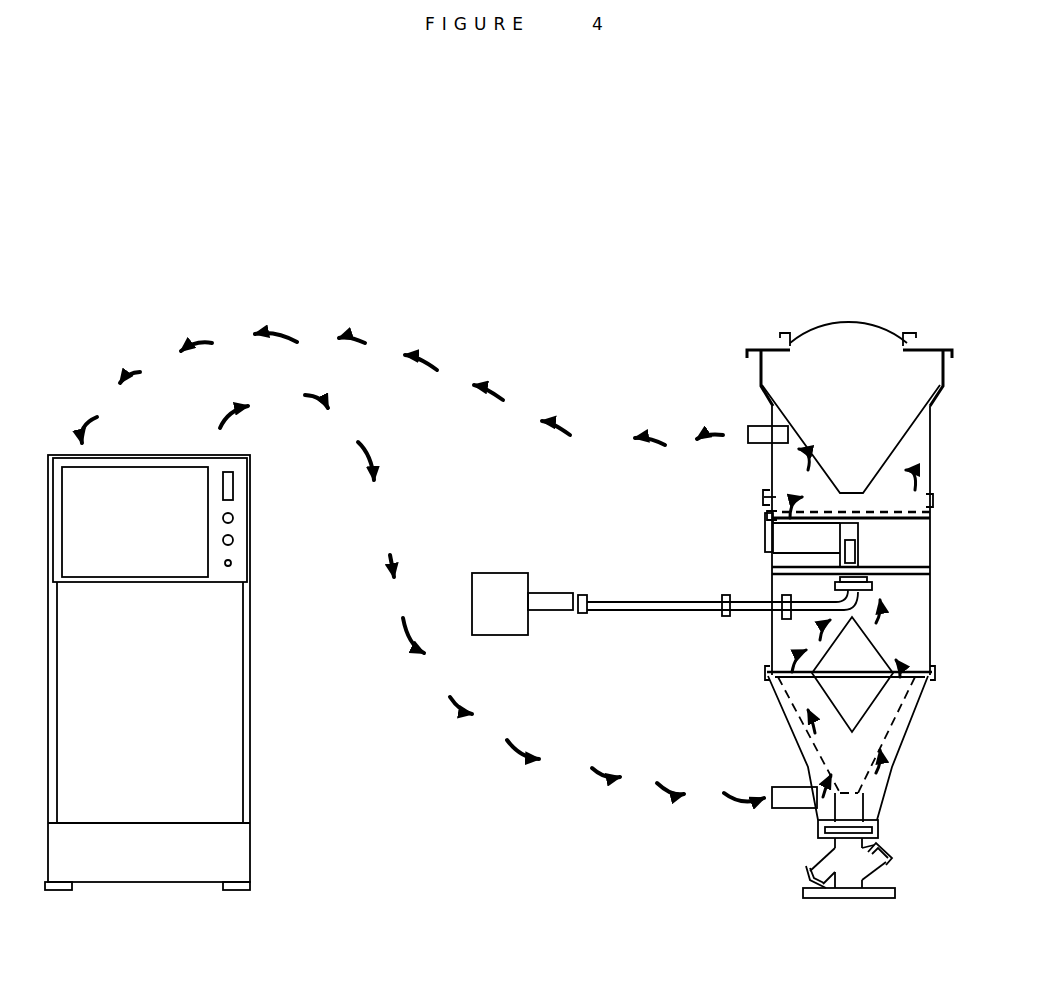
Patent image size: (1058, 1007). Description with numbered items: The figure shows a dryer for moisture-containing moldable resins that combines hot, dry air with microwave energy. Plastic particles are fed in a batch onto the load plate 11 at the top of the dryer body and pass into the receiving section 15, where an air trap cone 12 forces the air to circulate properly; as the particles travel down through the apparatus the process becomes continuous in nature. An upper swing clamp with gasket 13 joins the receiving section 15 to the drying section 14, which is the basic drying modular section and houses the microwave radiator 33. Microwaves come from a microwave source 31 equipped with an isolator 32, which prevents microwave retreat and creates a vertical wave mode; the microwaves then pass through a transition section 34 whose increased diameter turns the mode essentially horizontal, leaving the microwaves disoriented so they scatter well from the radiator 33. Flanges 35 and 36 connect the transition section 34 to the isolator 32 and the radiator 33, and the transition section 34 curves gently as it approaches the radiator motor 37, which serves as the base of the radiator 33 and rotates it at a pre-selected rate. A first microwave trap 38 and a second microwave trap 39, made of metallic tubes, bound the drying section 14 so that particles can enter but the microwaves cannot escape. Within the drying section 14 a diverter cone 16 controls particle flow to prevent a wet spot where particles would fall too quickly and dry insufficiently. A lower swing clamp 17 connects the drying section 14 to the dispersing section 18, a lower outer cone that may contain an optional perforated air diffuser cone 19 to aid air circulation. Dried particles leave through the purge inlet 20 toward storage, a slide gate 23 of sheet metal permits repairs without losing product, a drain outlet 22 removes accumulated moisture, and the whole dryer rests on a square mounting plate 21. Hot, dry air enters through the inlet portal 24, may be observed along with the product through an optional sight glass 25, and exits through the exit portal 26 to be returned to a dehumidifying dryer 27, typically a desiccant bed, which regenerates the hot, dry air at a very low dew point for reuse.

The load plate 11 is at (885, 328).
The air trap cone 12 is at (862, 387).
The upper swing clamp with gasket 13 is at (763, 494).
The drying section 14 is at (785, 568).
The receiving section 15 is at (788, 480).
The diverter cone 16 is at (815, 672).
The lower swing clamp 17 is at (765, 669).
The dispersing section 18 is at (887, 798).
The air diffuser cone 19 is at (800, 715).
The purge inlet 20 is at (887, 862).
The mounting plate 21 is at (850, 898).
The drain outlet 22 is at (812, 877).
The slide gate 23 is at (818, 822).
The hot dry air inlet portal 24 is at (780, 808).
The sight glass 25 is at (765, 519).
The exit portal 26 is at (757, 426).
The dehumidifying dryer 27 is at (157, 793).
The microwave source 31 is at (485, 597).
The isolator 32 is at (558, 610).
The microwave radiator 33 is at (773, 554).
The transition section 34 is at (660, 605).
The flange 35 is at (580, 600).
The flange 36 is at (860, 589).
The radiator motor 37 is at (873, 578).
The first microwave trap 38 is at (873, 516).
The second microwave trap 39 is at (722, 615).